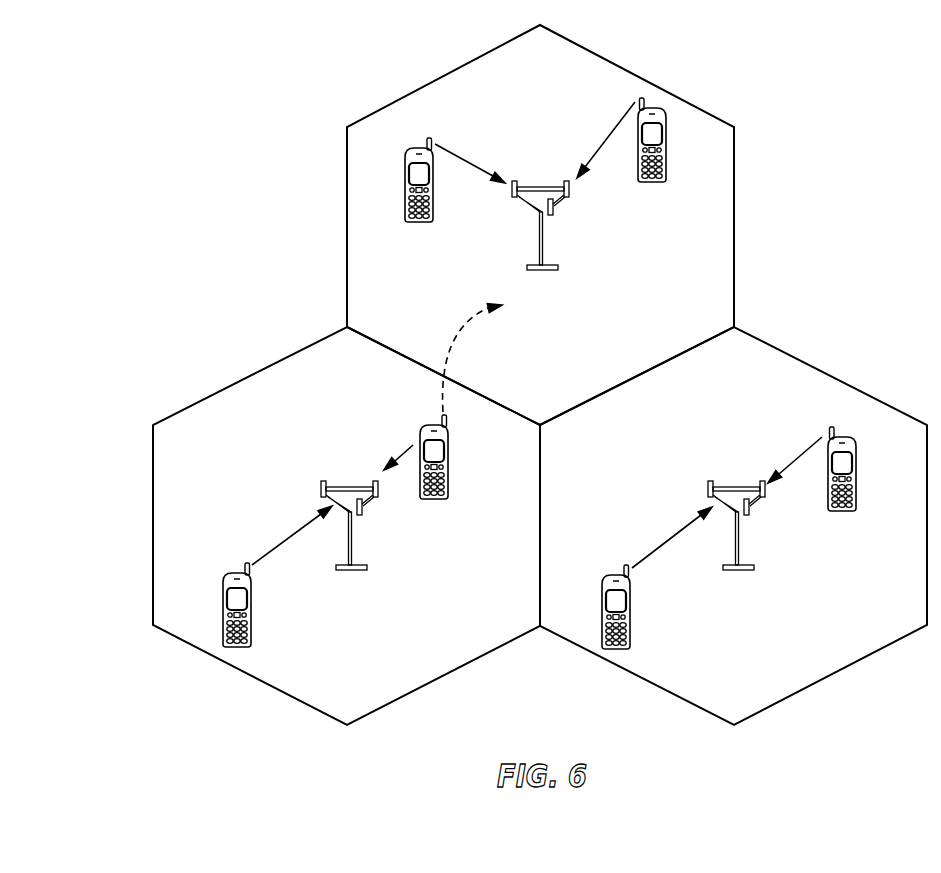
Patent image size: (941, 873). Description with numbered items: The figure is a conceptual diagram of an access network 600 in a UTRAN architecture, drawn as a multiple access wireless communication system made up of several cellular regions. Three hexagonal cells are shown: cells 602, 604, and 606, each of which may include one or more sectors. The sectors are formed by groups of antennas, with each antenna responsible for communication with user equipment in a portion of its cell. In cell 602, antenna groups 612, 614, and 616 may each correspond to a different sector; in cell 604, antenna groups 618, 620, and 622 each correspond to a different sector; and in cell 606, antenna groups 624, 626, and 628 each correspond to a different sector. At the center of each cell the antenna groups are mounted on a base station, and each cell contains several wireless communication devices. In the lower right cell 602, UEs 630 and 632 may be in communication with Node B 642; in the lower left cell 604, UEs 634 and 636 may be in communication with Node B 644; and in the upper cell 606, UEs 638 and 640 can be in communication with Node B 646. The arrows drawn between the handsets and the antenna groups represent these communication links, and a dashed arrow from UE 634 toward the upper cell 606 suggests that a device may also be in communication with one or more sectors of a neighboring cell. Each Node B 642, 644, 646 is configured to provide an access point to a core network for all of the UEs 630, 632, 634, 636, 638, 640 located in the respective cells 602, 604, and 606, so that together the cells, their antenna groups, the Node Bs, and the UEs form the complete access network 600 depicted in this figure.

The access network 600 is at (857, 112).
The cell 602 is at (831, 374).
The cell 604 is at (227, 386).
The cell 606 is at (620, 66).
The antenna group 612 is at (708, 484).
The antenna group 614 is at (748, 514).
The antenna group 616 is at (764, 494).
The antenna group 618 is at (360, 514).
The antenna group 620 is at (377, 494).
The antenna group 622 is at (320, 484).
The antenna group 624 is at (516, 196).
The antenna group 626 is at (553, 214).
The antenna group 628 is at (569, 194).
The UE 630 is at (856, 462).
The UE 632 is at (603, 598).
The UE 634 is at (448, 450).
The UE 636 is at (224, 598).
The UE 638 is at (418, 223).
The UE 640 is at (656, 182).
The Node B 642 is at (736, 505).
The Node B 644 is at (347, 504).
The Node B 646 is at (541, 206).